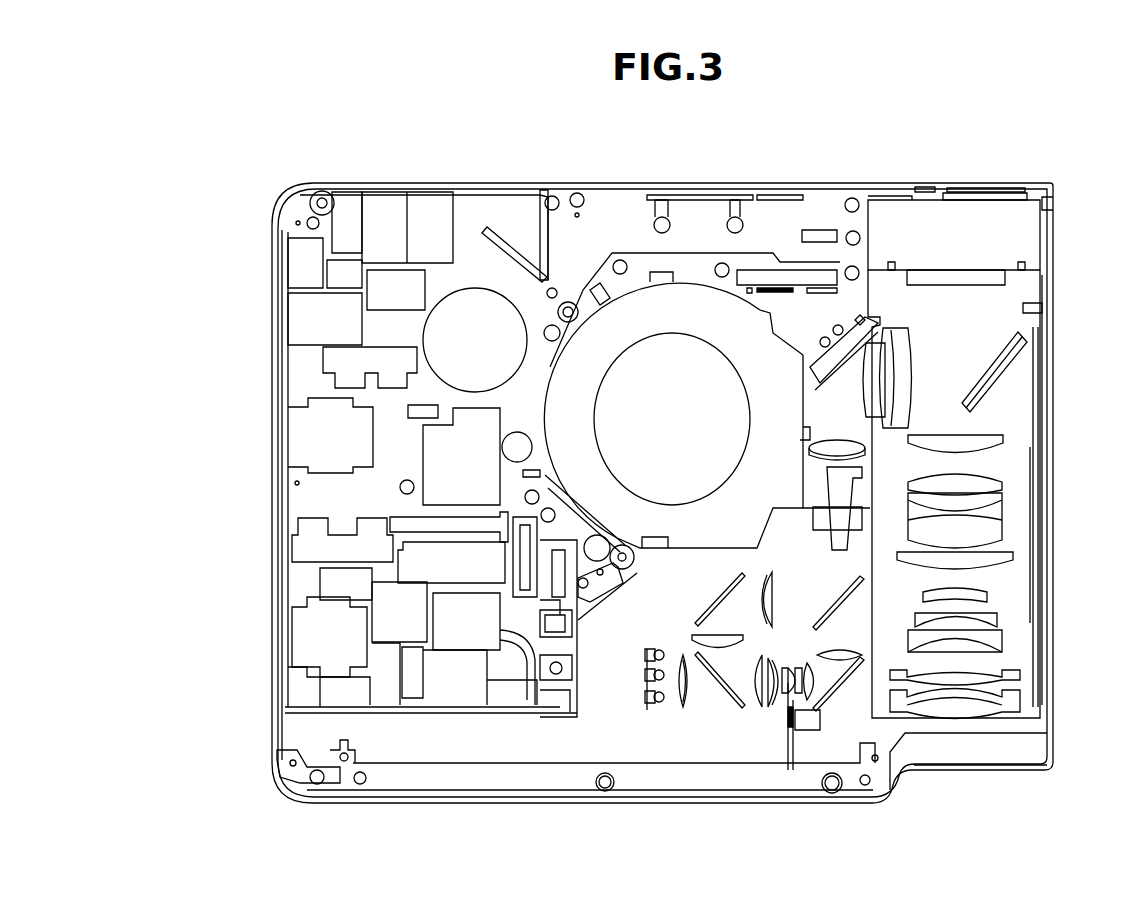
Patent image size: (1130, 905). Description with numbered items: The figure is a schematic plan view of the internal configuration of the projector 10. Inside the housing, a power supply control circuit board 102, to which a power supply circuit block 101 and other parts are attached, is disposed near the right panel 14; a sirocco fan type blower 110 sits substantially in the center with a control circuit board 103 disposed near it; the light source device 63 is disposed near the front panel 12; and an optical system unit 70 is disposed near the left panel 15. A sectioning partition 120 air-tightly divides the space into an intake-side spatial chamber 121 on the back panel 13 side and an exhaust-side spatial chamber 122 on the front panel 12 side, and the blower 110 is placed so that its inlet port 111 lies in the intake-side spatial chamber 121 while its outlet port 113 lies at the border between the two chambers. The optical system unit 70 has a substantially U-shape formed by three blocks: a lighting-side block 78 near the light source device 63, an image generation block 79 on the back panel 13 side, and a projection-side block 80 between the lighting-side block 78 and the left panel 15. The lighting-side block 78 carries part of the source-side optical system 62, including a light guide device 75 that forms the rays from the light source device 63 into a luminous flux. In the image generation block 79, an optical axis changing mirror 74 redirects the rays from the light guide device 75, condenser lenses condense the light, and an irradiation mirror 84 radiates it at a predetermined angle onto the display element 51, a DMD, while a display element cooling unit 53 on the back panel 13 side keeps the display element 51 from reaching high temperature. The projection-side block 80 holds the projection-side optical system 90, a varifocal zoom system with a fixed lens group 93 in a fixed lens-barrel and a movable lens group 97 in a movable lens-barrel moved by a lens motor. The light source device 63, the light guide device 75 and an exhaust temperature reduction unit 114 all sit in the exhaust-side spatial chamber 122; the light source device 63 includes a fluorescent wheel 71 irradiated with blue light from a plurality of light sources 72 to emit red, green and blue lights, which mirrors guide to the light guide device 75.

The projector 10 is at (1052, 190).
The front panel 12 is at (484, 797).
The back panel 13 is at (473, 186).
The right panel 14 is at (272, 531).
The left panel 15 is at (1052, 316).
The display element 51 is at (975, 275).
The display element cooling unit 53 is at (893, 222).
The source-side optical system 62 is at (826, 435).
The light source device 63 is at (717, 705).
The optical system unit 70 is at (1012, 405).
The fluorescent wheel 71 is at (787, 740).
The light sources 72 is at (650, 712).
The optical axis changing mirror 74 is at (878, 298).
The light guide device 75 is at (742, 268).
The lighting-side block 78 is at (857, 478).
The image generation block 79 is at (849, 198).
The projection-side block 80 is at (1007, 617).
The irradiation mirror 84 is at (1000, 372).
The projection-side optical system 90 is at (1002, 456).
The fixed lens group 93 is at (1010, 682).
The movable lens group 97 is at (997, 503).
The power supply circuit block 101 is at (312, 328).
The power supply control circuit board 102 is at (303, 577).
The control circuit board 103 is at (567, 240).
The blower 110 is at (633, 305).
The inlet port 111 is at (682, 365).
The outlet port 113 is at (668, 548).
The exhaust temperature reduction unit 114 is at (428, 775).
The sectioning partition 120 is at (337, 717).
The intake-side spatial chamber 121 is at (615, 243).
The exhaust-side spatial chamber 122 is at (405, 737).